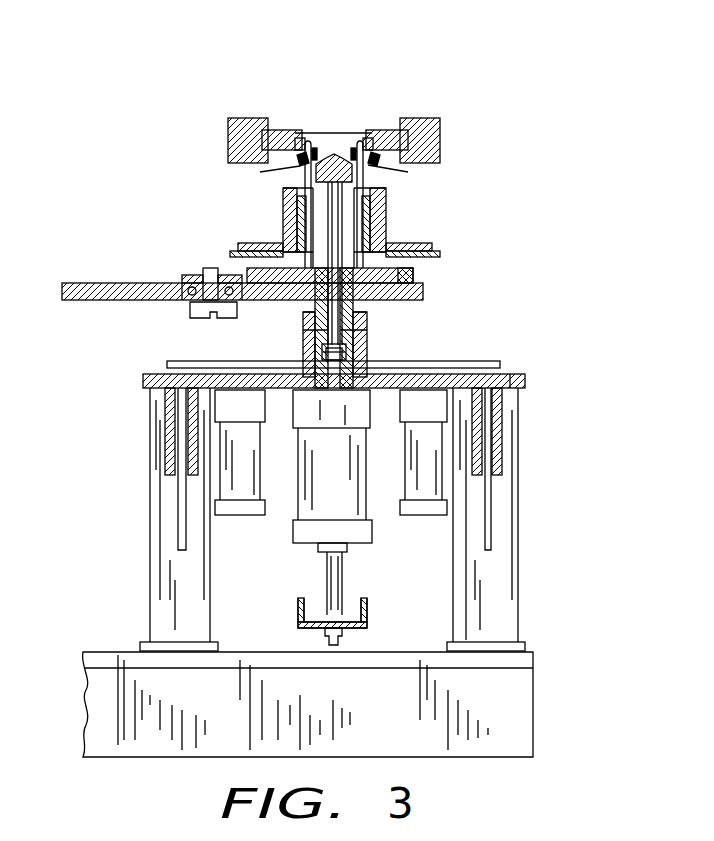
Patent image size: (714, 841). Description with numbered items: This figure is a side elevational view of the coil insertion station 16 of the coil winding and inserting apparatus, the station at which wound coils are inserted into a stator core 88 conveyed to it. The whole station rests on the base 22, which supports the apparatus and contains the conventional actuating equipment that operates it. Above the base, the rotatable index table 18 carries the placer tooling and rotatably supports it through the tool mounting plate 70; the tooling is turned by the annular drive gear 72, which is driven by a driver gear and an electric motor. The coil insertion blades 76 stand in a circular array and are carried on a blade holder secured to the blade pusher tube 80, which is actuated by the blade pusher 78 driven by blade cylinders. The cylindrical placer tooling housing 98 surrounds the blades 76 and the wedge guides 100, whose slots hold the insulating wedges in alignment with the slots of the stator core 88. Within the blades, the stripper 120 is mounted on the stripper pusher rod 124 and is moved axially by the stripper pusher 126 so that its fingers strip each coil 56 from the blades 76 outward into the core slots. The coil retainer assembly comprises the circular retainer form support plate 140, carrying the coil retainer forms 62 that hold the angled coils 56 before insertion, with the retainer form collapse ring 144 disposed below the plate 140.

The coil insertion station 16 is at (160, 103).
The rotatable index table 18 is at (422, 293).
The base 22 is at (510, 727).
The coil 56 is at (298, 163).
The coil retainer form 62 is at (283, 212).
The tool mounting plate 70 is at (402, 272).
The annular drive gear 72 is at (252, 270).
The coil insertion blades 76 is at (320, 150).
The blade pusher 78 is at (370, 360).
The blade pusher tube 80 is at (352, 301).
The stator core 88 is at (365, 142).
The cylindrical placer tooling housing 98 is at (370, 213).
The wedge guides 100 is at (306, 172).
The stripper 120 is at (337, 164).
The stripper pusher rod 124 is at (330, 301).
The stripper pusher 126 is at (325, 372).
The retainer form support plate 140 is at (420, 244).
The retainer form collapse ring 144 is at (438, 253).